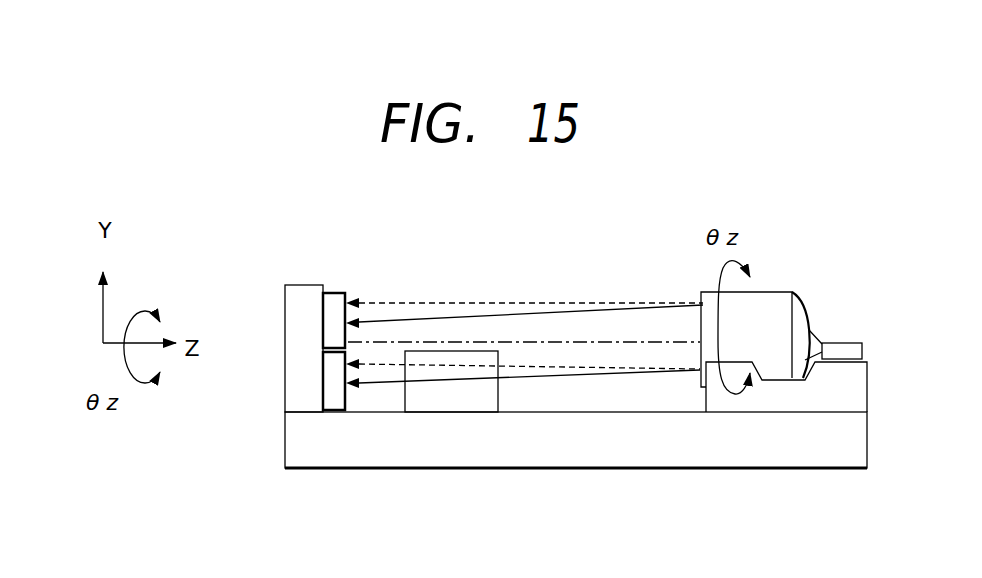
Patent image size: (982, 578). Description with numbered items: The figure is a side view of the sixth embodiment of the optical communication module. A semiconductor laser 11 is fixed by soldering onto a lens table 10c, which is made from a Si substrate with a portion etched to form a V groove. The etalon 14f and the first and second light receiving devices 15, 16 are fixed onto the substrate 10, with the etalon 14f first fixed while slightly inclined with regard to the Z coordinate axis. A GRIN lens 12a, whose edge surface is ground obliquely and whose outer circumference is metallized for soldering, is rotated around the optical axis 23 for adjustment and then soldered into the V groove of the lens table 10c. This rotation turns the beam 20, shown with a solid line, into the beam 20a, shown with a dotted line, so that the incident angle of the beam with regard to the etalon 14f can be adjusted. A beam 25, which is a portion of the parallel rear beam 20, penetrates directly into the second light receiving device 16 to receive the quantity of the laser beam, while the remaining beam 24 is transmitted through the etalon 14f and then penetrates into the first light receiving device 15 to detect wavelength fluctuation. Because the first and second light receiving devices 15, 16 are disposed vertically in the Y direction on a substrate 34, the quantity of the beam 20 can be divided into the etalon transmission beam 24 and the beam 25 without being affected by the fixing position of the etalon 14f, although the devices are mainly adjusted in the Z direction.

The substrate 10 is at (299, 453).
The lens table 10c is at (790, 383).
The semiconductor laser 11 is at (843, 342).
The GRIN lens 12a is at (773, 300).
The etalon 14f is at (443, 350).
The first light receiving device 15 is at (337, 392).
The second light receiving device 16 is at (335, 310).
The beam 20 is at (560, 313).
The beam 20a is at (512, 303).
The optical axis 23 is at (575, 341).
The etalon transmission beam 24 is at (388, 382).
The beam 25 is at (385, 320).
The substrate 34 is at (297, 292).